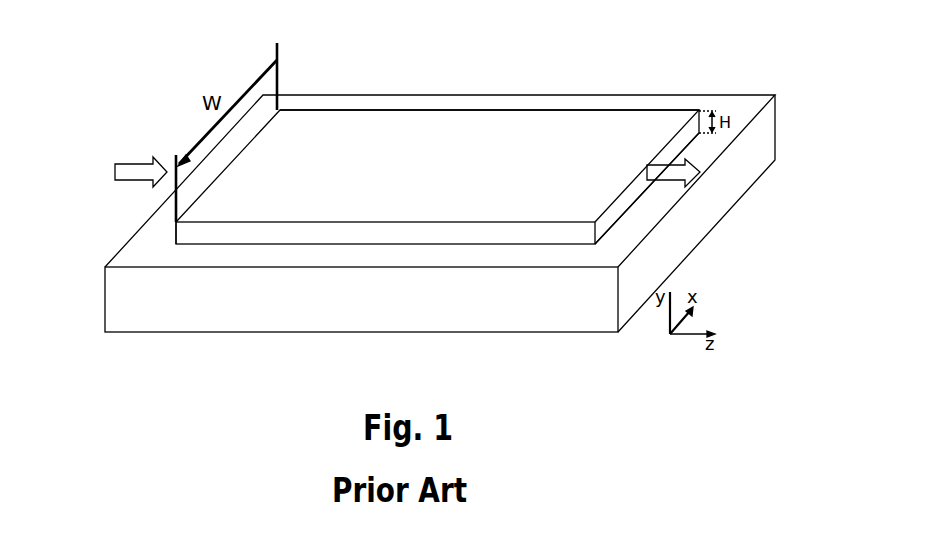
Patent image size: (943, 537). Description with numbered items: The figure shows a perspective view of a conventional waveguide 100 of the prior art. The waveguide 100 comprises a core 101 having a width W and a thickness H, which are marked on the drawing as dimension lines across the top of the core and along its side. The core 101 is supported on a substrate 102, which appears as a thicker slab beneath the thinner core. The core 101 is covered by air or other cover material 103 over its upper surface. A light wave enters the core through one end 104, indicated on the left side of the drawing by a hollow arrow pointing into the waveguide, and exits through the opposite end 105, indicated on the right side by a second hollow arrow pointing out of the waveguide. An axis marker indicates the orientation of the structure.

The conventional waveguide 100 is at (171, 88).
The core 101 is at (442, 120).
The substrate 102 is at (513, 312).
The cover material 103 is at (572, 83).
The one end 104 is at (177, 222).
The opposite end 105 is at (628, 200).